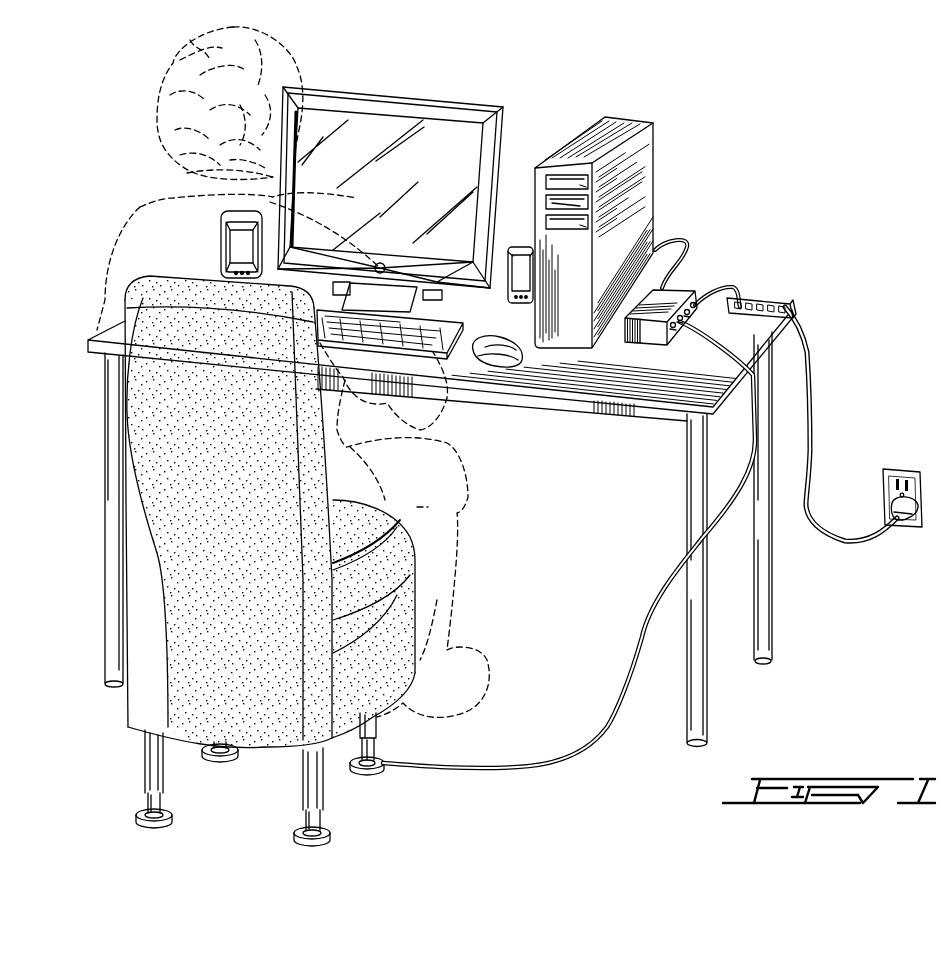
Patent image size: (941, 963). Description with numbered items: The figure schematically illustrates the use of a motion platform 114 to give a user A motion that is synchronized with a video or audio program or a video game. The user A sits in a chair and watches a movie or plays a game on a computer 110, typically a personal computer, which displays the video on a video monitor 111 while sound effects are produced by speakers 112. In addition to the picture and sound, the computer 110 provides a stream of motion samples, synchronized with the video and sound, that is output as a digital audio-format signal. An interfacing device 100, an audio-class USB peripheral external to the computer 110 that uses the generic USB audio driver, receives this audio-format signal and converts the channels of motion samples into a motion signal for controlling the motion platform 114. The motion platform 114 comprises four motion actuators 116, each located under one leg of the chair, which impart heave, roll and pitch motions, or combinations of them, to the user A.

The interfacing device 100 is at (693, 290).
The computer 110 is at (657, 177).
The video monitor 111 is at (452, 112).
The speakers 112 is at (238, 240).
The motion platform 114 is at (375, 748).
The motion actuators 116 is at (143, 812).
The user A is at (166, 78).